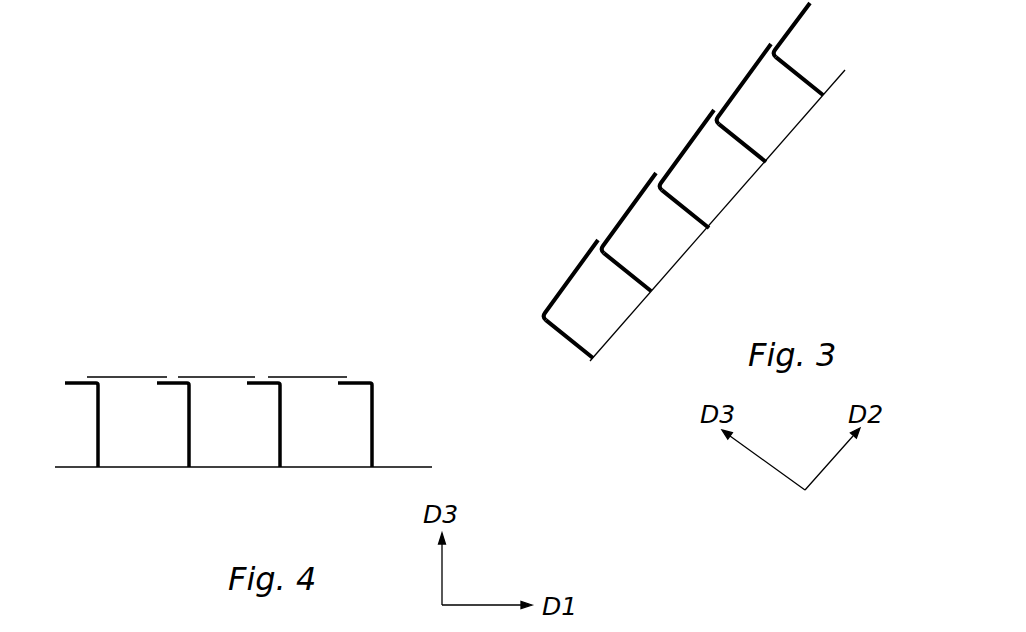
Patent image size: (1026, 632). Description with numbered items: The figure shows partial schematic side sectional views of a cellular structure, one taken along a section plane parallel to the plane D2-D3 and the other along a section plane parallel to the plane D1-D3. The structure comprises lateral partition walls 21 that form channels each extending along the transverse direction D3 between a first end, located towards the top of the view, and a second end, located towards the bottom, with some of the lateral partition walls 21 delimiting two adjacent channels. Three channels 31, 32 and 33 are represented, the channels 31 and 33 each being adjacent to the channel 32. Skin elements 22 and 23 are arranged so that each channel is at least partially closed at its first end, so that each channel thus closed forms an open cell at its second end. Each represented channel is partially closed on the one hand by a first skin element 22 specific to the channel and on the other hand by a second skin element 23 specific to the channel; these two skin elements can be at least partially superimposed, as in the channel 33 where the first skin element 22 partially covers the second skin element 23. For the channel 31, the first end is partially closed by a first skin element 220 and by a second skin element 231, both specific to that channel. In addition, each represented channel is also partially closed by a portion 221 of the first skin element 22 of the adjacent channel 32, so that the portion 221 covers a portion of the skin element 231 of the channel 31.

In FIG. 3, the lateral partition wall 21 is at (800, 77).
In FIG. 4, the lateral partition wall 21 is at (97, 448).
In FIG. 3, the first skin element 22 is at (746, 79).
In FIG. 4, the first skin element 22 is at (225, 377).
In FIG. 4, the second skin element 23 is at (72, 386).
In FIG. 4, the first skin element 220 is at (138, 376).
In FIG. 4, the portion of the first skin element 221 is at (186, 366).
In FIG. 4, the second skin element 231 is at (168, 384).
In FIG. 4, the channel 31 is at (166, 490).
In FIG. 4, the channel 32 is at (251, 490).
In FIG. 4, the channel 33 is at (330, 490).